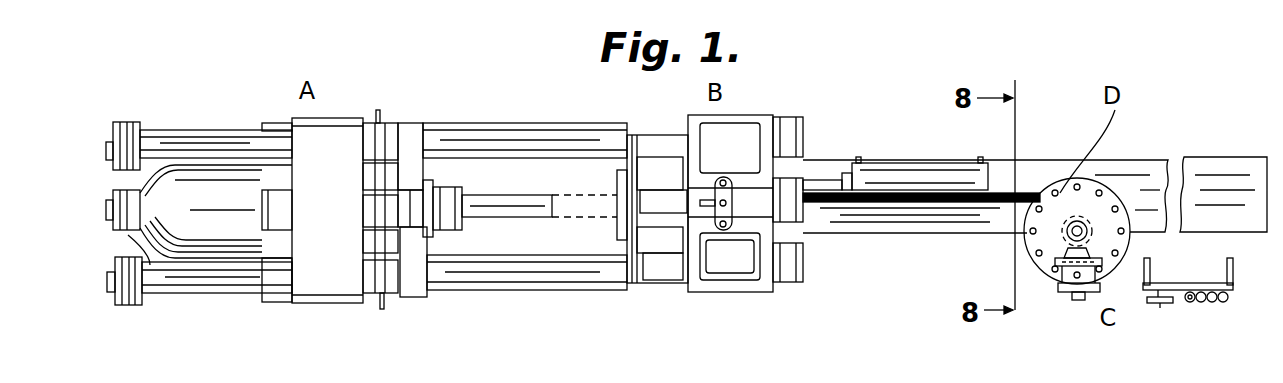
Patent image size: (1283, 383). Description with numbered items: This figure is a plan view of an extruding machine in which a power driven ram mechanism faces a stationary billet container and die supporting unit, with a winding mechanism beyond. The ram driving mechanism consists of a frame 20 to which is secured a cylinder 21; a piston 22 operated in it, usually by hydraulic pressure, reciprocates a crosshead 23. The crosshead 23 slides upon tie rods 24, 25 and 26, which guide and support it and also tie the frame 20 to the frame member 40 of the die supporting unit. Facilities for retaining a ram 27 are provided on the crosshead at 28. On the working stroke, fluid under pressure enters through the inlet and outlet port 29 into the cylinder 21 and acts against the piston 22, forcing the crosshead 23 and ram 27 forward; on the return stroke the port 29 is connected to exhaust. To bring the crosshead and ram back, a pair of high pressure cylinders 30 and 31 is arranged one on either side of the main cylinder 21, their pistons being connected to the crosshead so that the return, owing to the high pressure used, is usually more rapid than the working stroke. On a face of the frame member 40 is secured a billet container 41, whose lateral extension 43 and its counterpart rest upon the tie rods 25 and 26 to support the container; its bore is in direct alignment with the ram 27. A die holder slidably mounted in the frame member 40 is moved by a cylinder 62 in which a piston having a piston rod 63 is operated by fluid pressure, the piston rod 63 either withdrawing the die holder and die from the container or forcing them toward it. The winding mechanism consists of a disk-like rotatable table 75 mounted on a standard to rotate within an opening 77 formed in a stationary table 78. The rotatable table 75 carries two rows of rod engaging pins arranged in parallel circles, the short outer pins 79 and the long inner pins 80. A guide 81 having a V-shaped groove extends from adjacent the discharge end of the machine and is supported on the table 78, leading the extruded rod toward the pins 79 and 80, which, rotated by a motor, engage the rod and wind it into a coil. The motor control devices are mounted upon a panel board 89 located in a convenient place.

The frame 20 is at (333, 283).
The cylinder 21 is at (178, 215).
The piston 22 is at (390, 132).
The crosshead 23 is at (417, 133).
The tie rod 24 is at (617, 218).
The tie rod 25 is at (525, 273).
The tie rod 26 is at (515, 138).
The ram 27 is at (525, 205).
The ram retaining facilities 28 is at (455, 195).
The inlet and outlet port 29 is at (147, 263).
The high pressure cylinder 30 is at (213, 142).
The high pressure cylinder 31 is at (233, 278).
The frame member 40 is at (752, 130).
The billet container 41 is at (640, 170).
The lateral extension 43 is at (648, 260).
The cylinder 62 is at (897, 177).
The piston rod 63 is at (828, 180).
The rotatable table 75 is at (1043, 267).
The opening 77 is at (1103, 180).
The stationary table 78 is at (1053, 165).
The short outer pins 79 is at (1033, 233).
The long inner pins 80 is at (1112, 243).
The guide 81 is at (943, 207).
The panel board 89 is at (1193, 283).